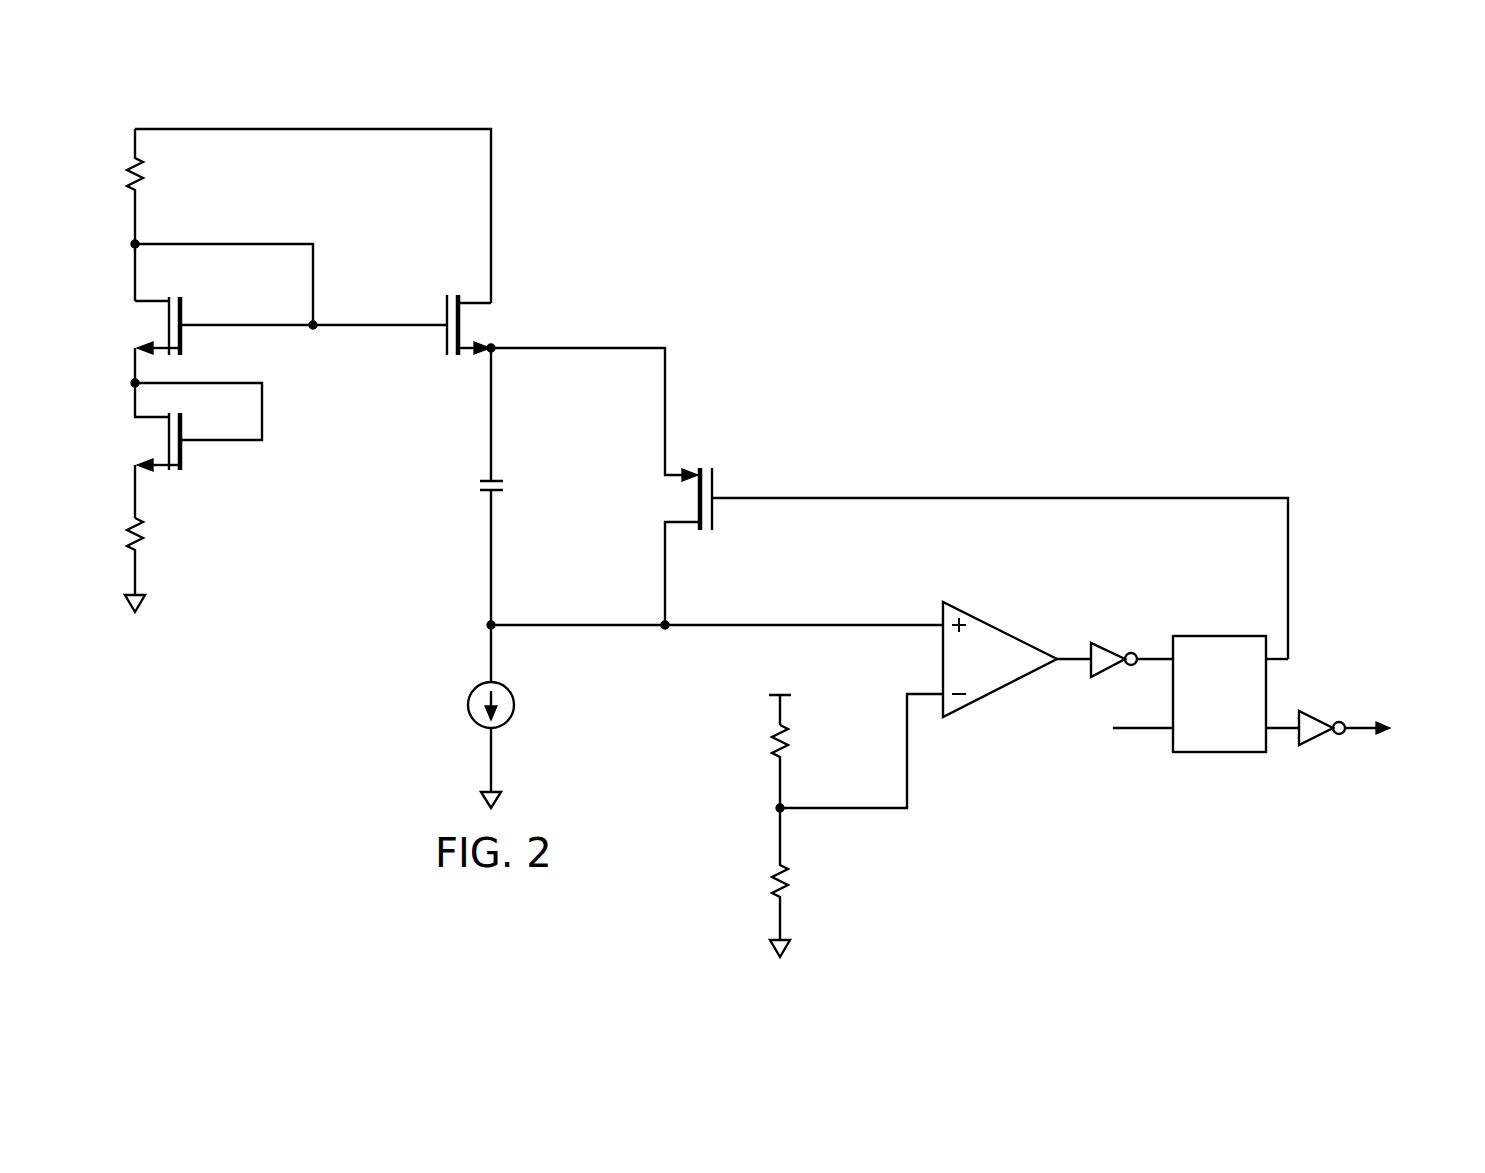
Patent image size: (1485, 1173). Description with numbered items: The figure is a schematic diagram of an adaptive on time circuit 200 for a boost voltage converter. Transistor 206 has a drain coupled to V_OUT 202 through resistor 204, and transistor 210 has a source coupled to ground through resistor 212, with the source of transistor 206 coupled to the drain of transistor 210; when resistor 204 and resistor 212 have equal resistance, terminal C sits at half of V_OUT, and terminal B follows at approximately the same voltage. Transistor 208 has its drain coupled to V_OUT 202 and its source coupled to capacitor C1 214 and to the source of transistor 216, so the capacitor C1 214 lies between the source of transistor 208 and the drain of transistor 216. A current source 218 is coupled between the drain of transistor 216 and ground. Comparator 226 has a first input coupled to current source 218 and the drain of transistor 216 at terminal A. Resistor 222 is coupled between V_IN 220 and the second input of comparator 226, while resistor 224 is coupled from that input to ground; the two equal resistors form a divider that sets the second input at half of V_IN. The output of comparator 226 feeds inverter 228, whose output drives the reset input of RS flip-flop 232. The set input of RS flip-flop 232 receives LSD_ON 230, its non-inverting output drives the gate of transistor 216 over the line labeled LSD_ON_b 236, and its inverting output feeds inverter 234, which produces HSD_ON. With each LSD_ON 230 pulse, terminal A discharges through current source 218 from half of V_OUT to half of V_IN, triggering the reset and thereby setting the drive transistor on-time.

The adaptive on time circuit 200 is at (1008, 198).
The V_OUT 202 is at (313, 131).
The resistor 204 is at (143, 173).
The transistor 206 is at (183, 313).
The transistor 208 is at (445, 337).
The transistor 210 is at (183, 452).
The resistor 212 is at (143, 540).
The capacitor C1 214 is at (480, 487).
The transistor 216 is at (714, 487).
The current source 218 is at (516, 705).
The V_IN 220 is at (788, 700).
The resistor 222 is at (788, 742).
The resistor 224 is at (788, 882).
The comparator 226 is at (1012, 635).
The inverter 228 is at (1118, 641).
The LSD_ON 230 is at (1142, 733).
The RS flip-flop 232 is at (1218, 753).
The inverter 234 is at (1316, 740).
The inverted low side driver on signal 236 is at (1017, 500).